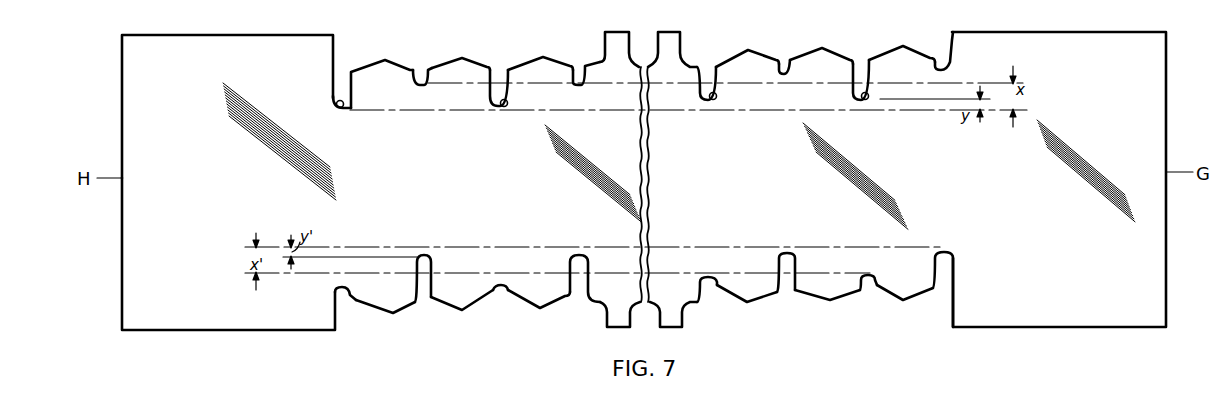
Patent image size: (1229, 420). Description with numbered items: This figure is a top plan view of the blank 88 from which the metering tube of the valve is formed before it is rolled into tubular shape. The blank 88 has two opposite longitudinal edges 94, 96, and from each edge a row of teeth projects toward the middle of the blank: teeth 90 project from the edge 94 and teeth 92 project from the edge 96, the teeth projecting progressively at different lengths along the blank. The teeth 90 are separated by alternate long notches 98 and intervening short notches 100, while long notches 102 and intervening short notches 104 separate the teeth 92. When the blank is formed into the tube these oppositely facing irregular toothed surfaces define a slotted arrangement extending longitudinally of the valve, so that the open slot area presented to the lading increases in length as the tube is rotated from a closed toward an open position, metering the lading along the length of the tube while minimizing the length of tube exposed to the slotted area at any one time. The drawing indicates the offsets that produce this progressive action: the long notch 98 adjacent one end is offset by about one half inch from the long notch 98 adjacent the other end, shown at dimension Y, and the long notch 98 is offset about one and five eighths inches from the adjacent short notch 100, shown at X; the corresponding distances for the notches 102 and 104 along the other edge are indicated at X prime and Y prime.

The blank 88 is at (1106, 44).
The teeth 90 is at (385, 62).
The teeth 92 is at (388, 310).
The edge 94 is at (222, 34).
The edge 96 is at (255, 330).
The long notches 98 is at (336, 104).
The short notches 100 is at (427, 85).
The long notches 102 is at (428, 262).
The short notches 104 is at (503, 290).